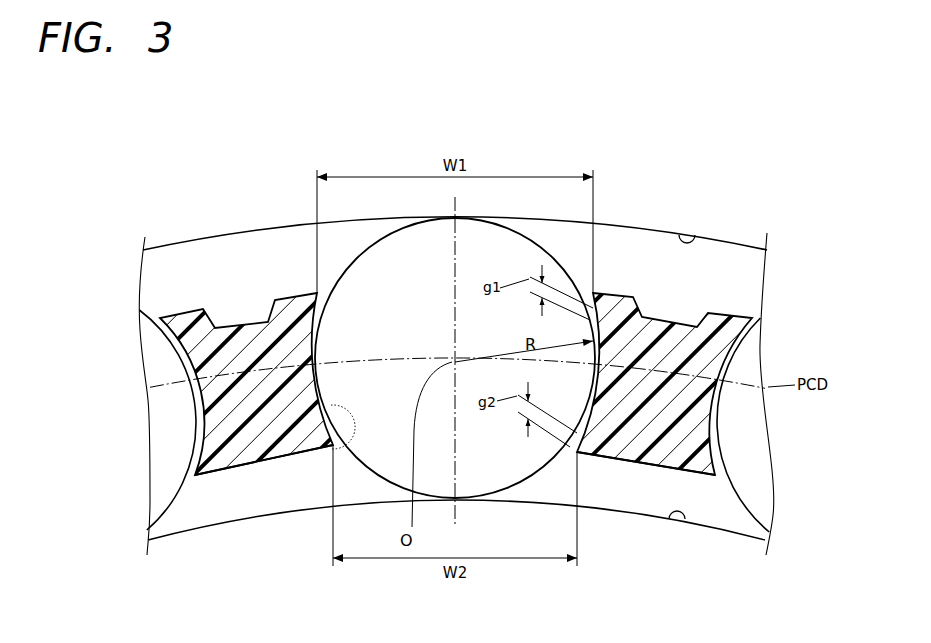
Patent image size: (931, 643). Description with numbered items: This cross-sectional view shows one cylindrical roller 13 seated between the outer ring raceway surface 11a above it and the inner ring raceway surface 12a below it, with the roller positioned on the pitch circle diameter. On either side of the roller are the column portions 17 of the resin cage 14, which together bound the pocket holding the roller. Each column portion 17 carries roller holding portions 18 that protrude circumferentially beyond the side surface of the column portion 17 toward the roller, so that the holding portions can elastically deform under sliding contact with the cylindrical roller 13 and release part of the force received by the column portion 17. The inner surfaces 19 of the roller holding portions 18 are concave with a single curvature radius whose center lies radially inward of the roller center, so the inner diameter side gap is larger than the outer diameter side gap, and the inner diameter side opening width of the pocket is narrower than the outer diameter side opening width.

The outer ring raceway surface 11a is at (696, 231).
The inner ring raceway surface 12a is at (672, 526).
The cylindrical roller 13 is at (353, 260).
The resin cage 14 is at (712, 309).
The column portion 17 is at (226, 455).
The roller holding portion 18 is at (292, 298).
The inner surface 19 is at (348, 452).